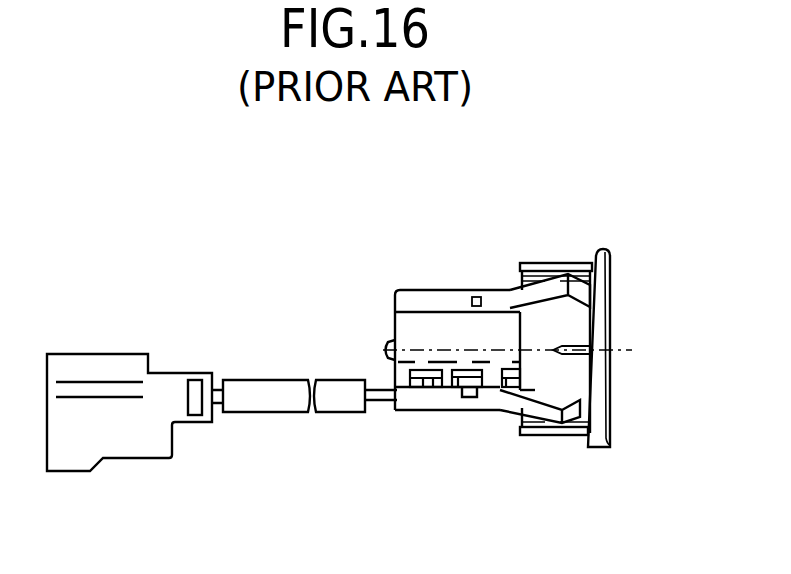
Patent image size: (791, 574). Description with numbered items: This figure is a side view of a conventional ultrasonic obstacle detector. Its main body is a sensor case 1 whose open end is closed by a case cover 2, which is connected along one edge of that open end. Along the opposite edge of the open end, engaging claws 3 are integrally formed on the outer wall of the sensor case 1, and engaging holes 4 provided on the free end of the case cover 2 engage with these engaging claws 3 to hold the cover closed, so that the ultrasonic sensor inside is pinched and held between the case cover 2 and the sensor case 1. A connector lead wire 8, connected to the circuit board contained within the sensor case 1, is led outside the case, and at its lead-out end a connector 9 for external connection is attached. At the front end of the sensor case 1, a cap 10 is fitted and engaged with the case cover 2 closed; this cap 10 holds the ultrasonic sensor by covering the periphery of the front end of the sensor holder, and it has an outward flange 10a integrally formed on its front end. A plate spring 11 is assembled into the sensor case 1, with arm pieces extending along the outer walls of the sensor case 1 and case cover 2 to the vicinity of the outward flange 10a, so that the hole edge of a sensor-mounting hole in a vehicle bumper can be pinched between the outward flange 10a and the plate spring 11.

The sensor case 1 is at (407, 327).
The case cover 2 is at (400, 377).
The engaging claws 3 is at (423, 378).
The engaging holes 4 is at (433, 388).
The connector lead wire 8 is at (267, 402).
The connector 9 is at (113, 354).
The cap 10 is at (560, 268).
The outward flange 10a is at (605, 448).
The plate spring 11 is at (433, 298).